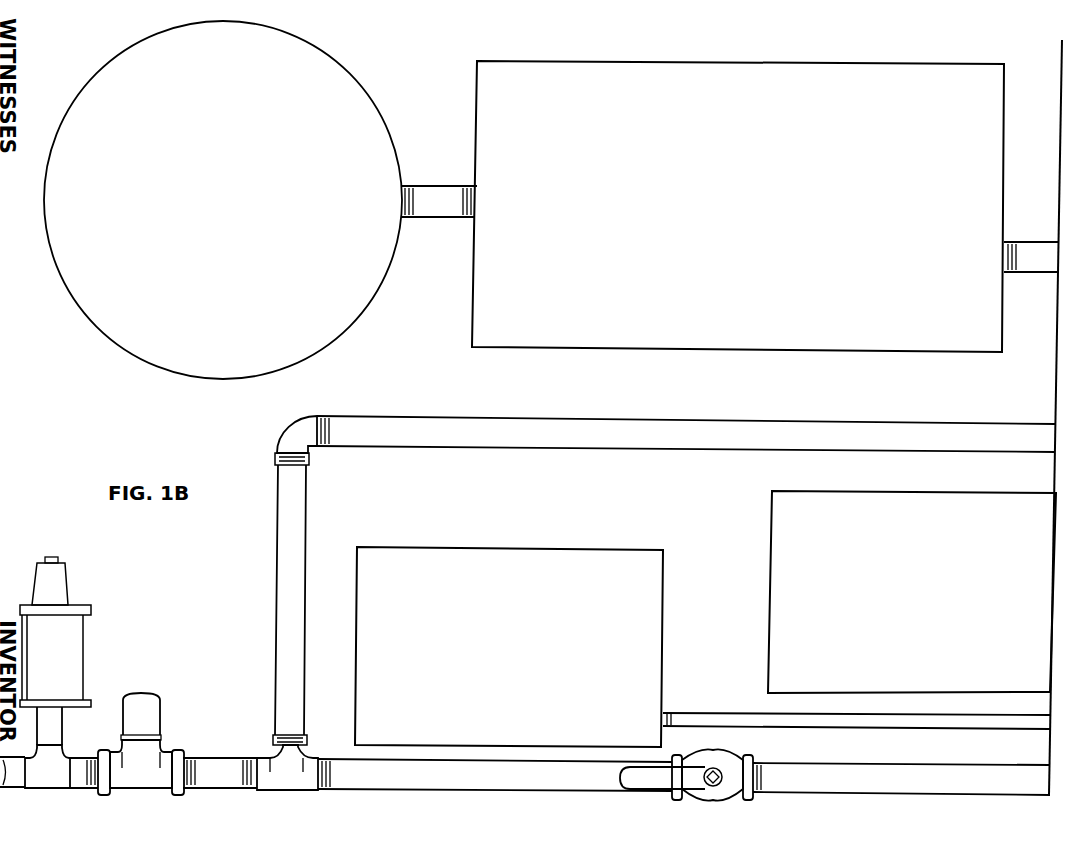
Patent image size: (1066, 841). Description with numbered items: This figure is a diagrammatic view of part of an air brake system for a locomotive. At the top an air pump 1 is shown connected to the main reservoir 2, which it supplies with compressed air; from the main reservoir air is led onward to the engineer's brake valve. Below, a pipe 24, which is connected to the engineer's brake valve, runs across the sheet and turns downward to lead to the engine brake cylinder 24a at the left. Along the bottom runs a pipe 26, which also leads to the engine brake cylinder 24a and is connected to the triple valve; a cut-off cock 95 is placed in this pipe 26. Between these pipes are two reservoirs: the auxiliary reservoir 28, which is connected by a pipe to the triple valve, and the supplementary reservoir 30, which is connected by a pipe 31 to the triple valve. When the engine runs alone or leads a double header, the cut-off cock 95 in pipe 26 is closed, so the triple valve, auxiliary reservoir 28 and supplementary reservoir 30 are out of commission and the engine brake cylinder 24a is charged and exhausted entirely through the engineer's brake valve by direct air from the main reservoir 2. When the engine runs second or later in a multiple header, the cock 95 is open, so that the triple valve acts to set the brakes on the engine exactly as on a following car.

The air pump 1 is at (223, 200).
The main reservoir 2 is at (738, 206).
The pipe 24 is at (544, 603).
The engine brake cylinder 24a is at (65, 650).
The pipe 26 is at (525, 776).
The auxiliary reservoir 28 is at (912, 592).
The supplementary reservoir 30 is at (509, 647).
The pipe 31 is at (1008, 731).
The cut-off cock 95 is at (738, 760).